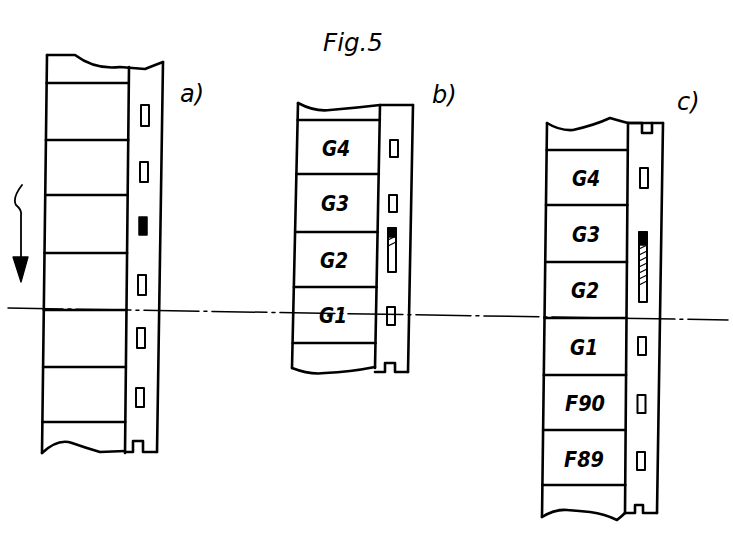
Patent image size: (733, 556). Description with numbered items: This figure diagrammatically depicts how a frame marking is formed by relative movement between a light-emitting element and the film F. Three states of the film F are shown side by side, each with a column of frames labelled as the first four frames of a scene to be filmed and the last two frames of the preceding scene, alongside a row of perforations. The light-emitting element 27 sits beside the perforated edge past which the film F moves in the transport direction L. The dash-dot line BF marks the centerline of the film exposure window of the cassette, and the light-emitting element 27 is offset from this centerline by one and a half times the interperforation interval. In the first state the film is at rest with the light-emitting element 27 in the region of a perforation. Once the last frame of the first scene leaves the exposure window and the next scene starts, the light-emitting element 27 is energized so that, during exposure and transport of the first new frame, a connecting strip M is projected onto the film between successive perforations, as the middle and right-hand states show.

The light-emitting element 27 is at (147, 227).
The connecting strip M is at (393, 248).
The film F is at (108, 440).
The film transport direction L is at (21, 221).
The exposure-window centerline BF is at (700, 320).